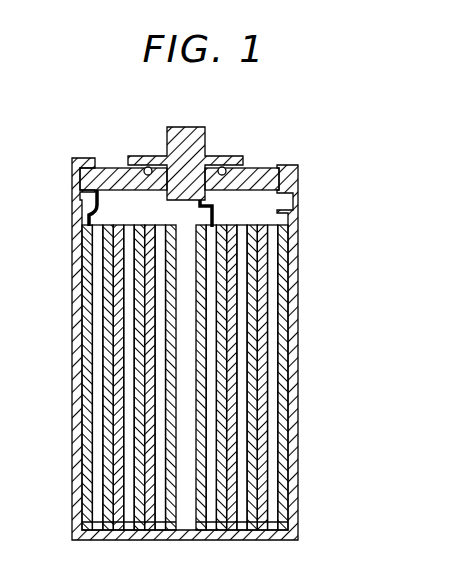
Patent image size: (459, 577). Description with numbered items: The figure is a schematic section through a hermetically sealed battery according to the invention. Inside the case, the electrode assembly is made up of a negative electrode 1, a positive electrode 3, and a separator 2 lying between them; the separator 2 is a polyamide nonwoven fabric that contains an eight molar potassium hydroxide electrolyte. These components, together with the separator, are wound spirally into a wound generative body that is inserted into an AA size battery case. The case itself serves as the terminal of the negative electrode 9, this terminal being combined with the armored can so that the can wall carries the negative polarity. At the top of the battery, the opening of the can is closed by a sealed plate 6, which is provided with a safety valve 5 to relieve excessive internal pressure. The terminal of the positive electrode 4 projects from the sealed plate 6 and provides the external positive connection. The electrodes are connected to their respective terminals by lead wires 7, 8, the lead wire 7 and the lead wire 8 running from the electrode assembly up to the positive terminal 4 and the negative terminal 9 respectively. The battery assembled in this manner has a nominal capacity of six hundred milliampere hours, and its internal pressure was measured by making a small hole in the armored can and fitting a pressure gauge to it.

The negative electrode 1 is at (283, 273).
The separator 2 is at (275, 322).
The positive electrode 3 is at (263, 387).
The terminal of the positive electrode 4 is at (206, 133).
The safety valve 5 is at (225, 167).
The sealed plate 6 is at (262, 178).
The lead wire 7 is at (217, 211).
The lead wire 8 is at (88, 221).
The terminal of the negative electrode 9 is at (293, 452).